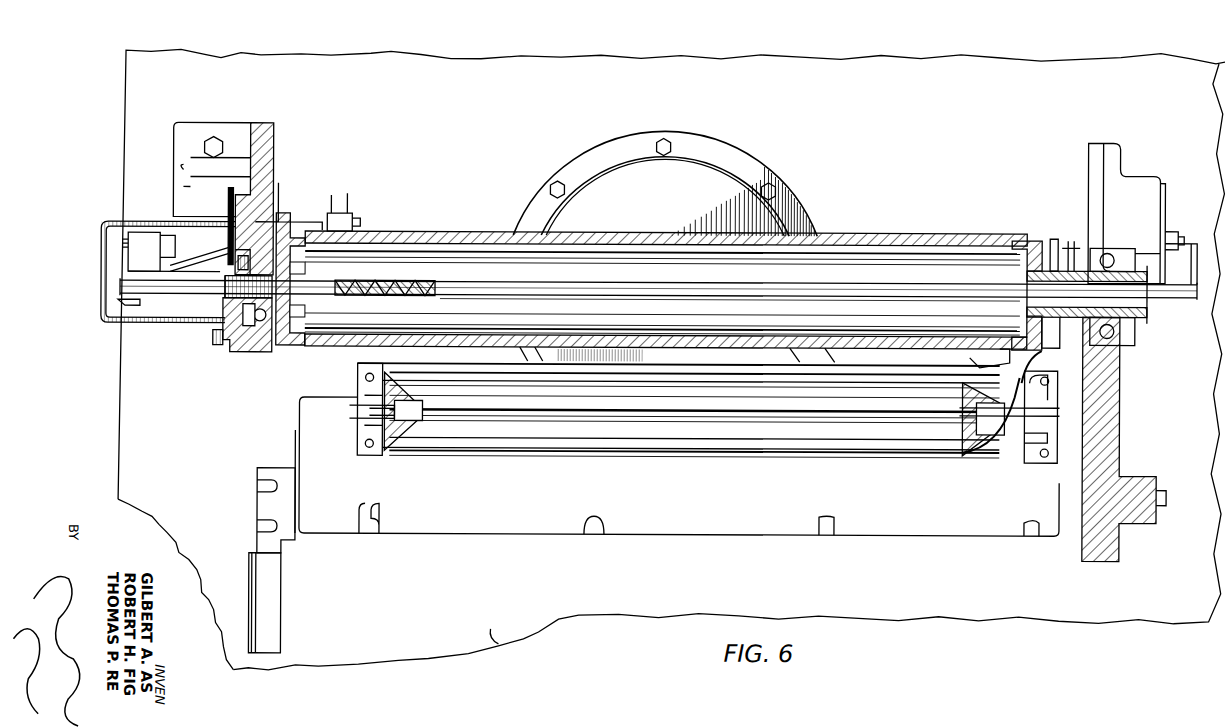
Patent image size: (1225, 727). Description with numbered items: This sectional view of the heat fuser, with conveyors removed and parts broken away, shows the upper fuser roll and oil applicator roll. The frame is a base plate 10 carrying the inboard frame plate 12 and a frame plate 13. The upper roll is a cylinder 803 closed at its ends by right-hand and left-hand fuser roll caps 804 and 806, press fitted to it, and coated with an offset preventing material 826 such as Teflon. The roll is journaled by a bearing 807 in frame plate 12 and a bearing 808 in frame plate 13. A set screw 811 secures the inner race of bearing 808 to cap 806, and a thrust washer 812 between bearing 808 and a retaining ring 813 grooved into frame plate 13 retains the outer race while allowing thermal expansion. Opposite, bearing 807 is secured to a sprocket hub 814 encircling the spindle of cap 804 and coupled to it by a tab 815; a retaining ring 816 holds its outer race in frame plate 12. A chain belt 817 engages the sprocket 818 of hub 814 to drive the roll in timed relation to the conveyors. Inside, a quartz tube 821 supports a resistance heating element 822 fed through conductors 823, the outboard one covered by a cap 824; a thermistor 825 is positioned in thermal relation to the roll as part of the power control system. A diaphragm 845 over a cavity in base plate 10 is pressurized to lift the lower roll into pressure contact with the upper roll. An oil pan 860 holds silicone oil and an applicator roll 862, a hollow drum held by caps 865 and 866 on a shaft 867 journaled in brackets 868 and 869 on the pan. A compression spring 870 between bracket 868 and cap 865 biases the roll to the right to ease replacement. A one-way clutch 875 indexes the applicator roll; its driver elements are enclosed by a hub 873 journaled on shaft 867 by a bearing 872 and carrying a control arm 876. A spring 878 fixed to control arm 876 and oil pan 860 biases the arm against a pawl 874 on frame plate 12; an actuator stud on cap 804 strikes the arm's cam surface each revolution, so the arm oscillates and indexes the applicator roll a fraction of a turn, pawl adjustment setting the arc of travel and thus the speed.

The base plate 10 is at (507, 648).
The inboard frame plate 12 is at (1130, 166).
The frame plate 13 is at (261, 120).
The cylinder 803 is at (315, 238).
The right-hand fuser roll cap 804 is at (1017, 241).
The left-hand fuser roll cap 806 is at (290, 347).
The bearing 807 is at (1135, 240).
The bearing 808 is at (266, 354).
The set screw 811 is at (225, 258).
The thrust washer 812 is at (225, 297).
The retaining ring 813 is at (258, 242).
The sprocket hub 814 is at (1147, 312).
The tab 815 is at (1080, 285).
The retaining ring 816 is at (1135, 334).
The chain belt 817 is at (1072, 238).
The sprocket 818 is at (1060, 348).
The quartz tube 821 is at (525, 300).
The resistance heating element 822 is at (445, 276).
The conductors 823 is at (101, 272).
The cap 824 is at (101, 235).
The thermistor 825 is at (360, 220).
The offset preventing material 826 is at (460, 231).
The diaphragm 845 is at (767, 148).
The oil pan 860 is at (470, 528).
The applicator roll 862 is at (598, 466).
The cap 865 is at (410, 450).
The cap 866 is at (960, 432).
The shaft 867 is at (600, 396).
The bracket 868 is at (388, 462).
The bracket 869 is at (1030, 460).
The compression spring 870 is at (425, 395).
The bearing 872 is at (1050, 435).
The hub 873 is at (1005, 425).
The pawl 874 is at (1053, 236).
The one-way clutch 875 is at (968, 460).
The control arm 876 is at (1058, 400).
The spring 878 is at (1100, 368).